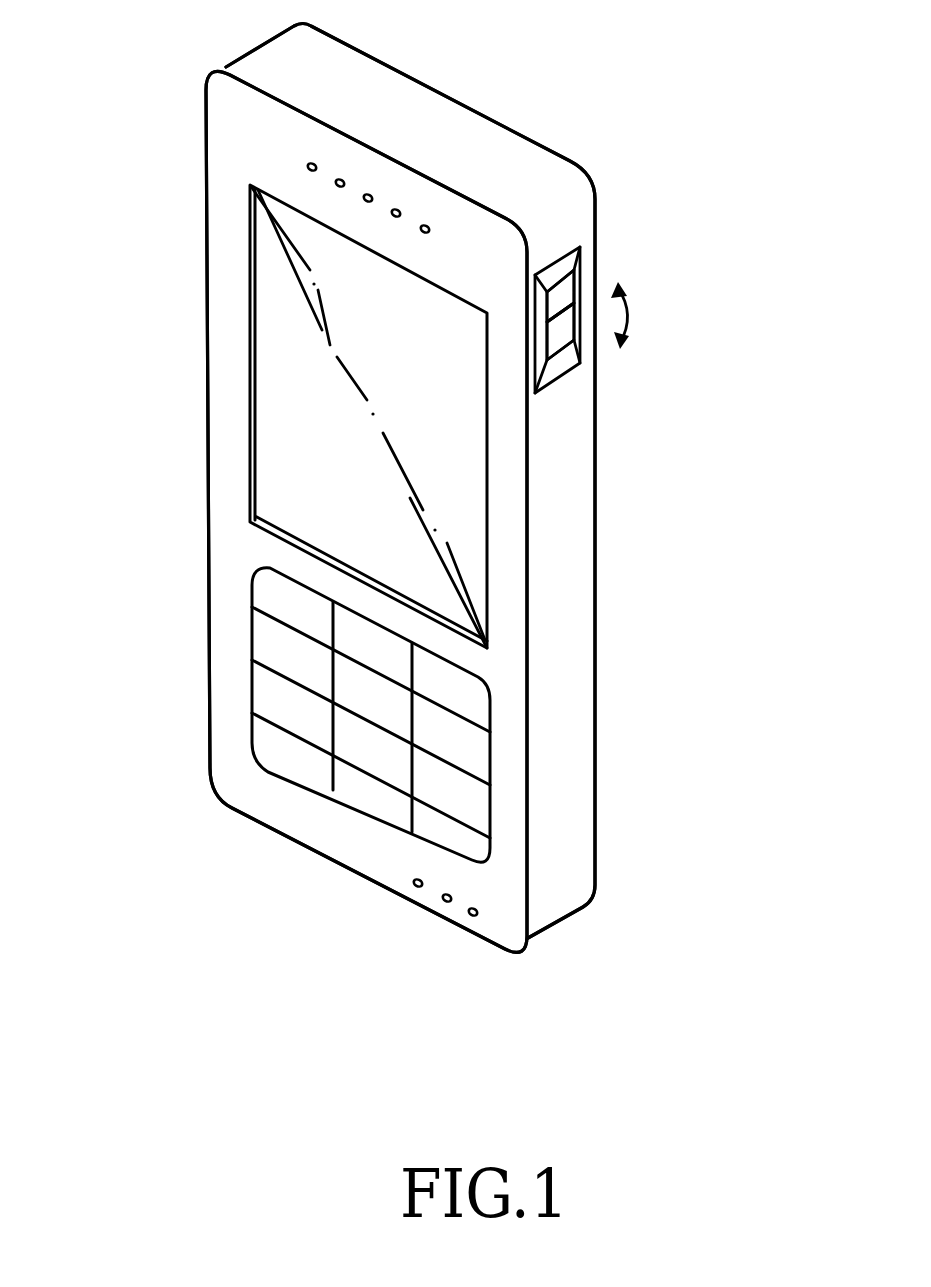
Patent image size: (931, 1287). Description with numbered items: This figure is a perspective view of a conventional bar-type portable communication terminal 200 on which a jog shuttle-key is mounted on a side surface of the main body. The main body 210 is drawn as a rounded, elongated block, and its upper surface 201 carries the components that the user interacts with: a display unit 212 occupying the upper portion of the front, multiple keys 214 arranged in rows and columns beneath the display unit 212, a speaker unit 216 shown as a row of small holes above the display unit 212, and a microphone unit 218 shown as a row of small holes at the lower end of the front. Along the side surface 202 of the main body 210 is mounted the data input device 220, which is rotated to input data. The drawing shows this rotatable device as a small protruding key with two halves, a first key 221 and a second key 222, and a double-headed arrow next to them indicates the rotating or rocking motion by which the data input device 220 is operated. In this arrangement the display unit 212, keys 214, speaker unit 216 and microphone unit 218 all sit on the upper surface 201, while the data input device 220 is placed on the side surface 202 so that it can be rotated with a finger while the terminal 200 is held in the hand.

The portable communication terminal 200 is at (755, 144).
The front surface of housing 201 is at (215, 152).
The side surface 202 is at (593, 484).
The main body 210 is at (573, 697).
The display unit 212 is at (463, 513).
The keys 214 is at (475, 748).
The speaker unit 216 is at (400, 212).
The microphone unit 218 is at (477, 916).
The data input device 220 is at (606, 383).
The first key 221 is at (580, 283).
The second key 222 is at (583, 347).